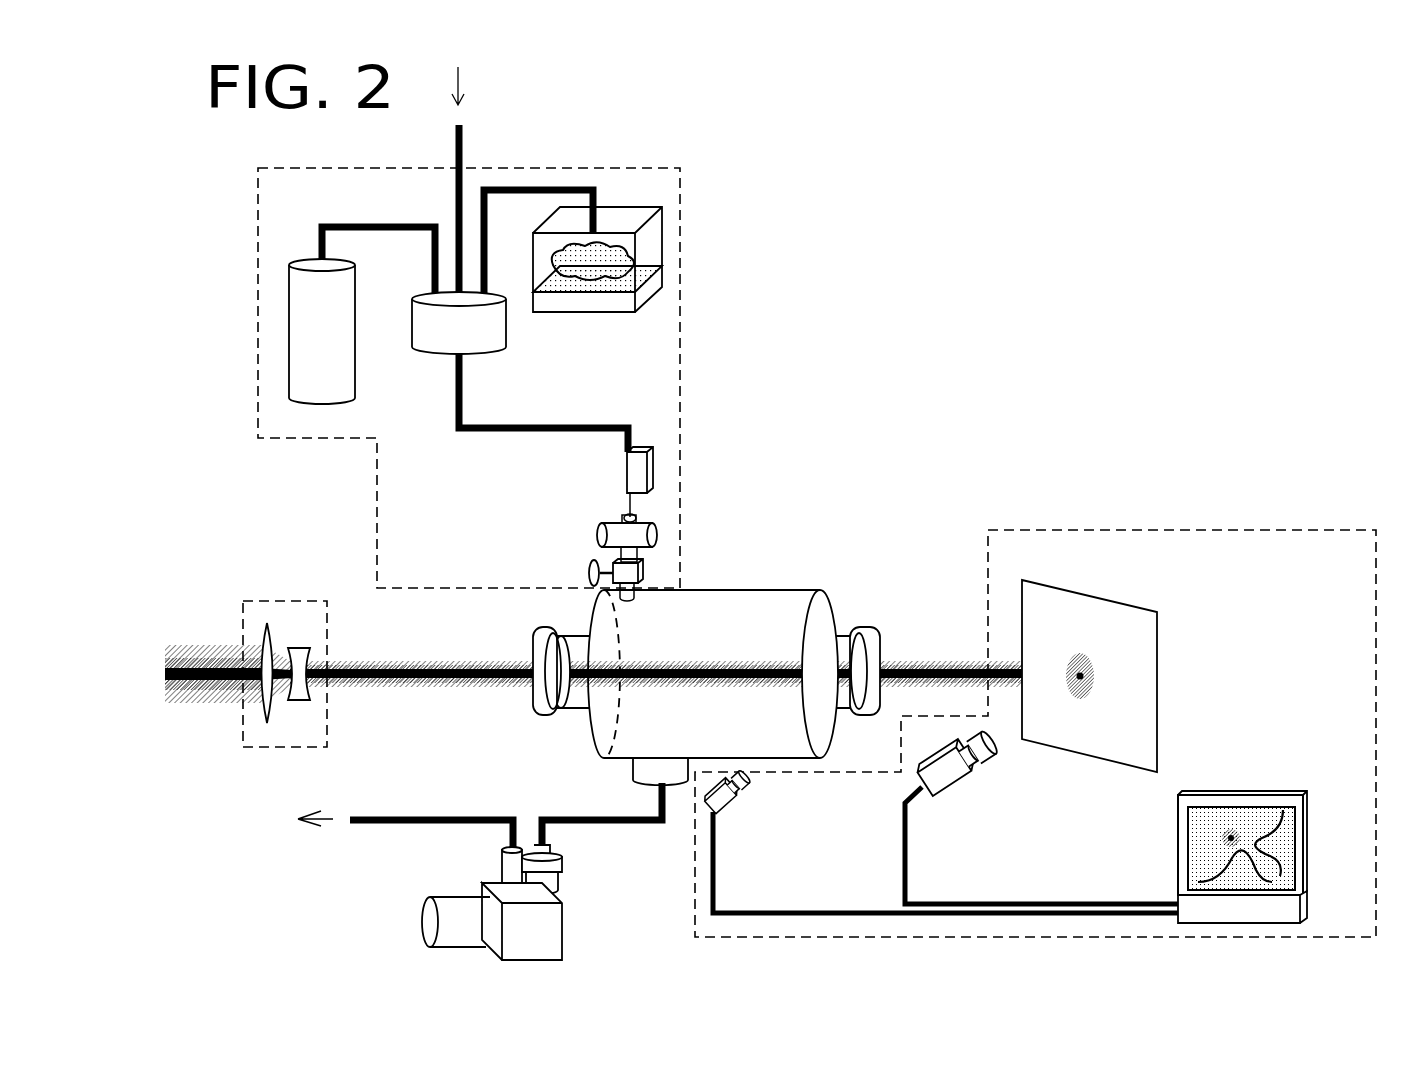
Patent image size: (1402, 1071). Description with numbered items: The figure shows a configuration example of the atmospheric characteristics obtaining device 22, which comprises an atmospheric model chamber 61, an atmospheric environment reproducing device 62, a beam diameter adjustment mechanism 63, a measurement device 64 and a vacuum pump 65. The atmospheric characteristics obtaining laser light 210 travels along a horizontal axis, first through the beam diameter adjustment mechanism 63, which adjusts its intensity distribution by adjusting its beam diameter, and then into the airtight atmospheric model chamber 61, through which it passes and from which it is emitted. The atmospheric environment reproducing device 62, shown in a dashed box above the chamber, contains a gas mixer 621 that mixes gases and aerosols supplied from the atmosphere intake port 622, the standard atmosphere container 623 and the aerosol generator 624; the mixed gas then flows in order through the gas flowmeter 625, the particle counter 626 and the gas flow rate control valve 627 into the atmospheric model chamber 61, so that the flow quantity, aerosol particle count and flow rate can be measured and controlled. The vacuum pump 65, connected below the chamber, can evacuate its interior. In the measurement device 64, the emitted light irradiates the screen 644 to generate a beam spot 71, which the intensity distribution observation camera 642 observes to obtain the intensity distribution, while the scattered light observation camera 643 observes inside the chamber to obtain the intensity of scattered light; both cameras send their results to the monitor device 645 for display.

The atmospheric characteristics obtaining device 22 is at (938, 360).
The atmospheric characteristics obtaining laser light 210 is at (428, 697).
The atmospheric model chamber 61 is at (712, 600).
The atmospheric environment reproducing device 62 is at (683, 184).
The gas mixer 621 is at (507, 350).
The atmosphere intake port 622 is at (463, 155).
The standard atmosphere container 623 is at (356, 279).
The aerosol generator 624 is at (663, 243).
The gas flowmeter 625 is at (645, 450).
The particle counter 626 is at (602, 520).
The gas flow rate control valve 627 is at (588, 573).
The beam diameter adjustment mechanism 63 is at (283, 600).
The measurement device 64 is at (1220, 530).
The intensity distribution observation camera 642 is at (980, 786).
The scattered light observation camera 643 is at (728, 815).
The screen 644 is at (1158, 636).
The monitor device 645 is at (1290, 800).
The vacuum pump 65 is at (557, 925).
The beam spot 71 is at (1097, 676).